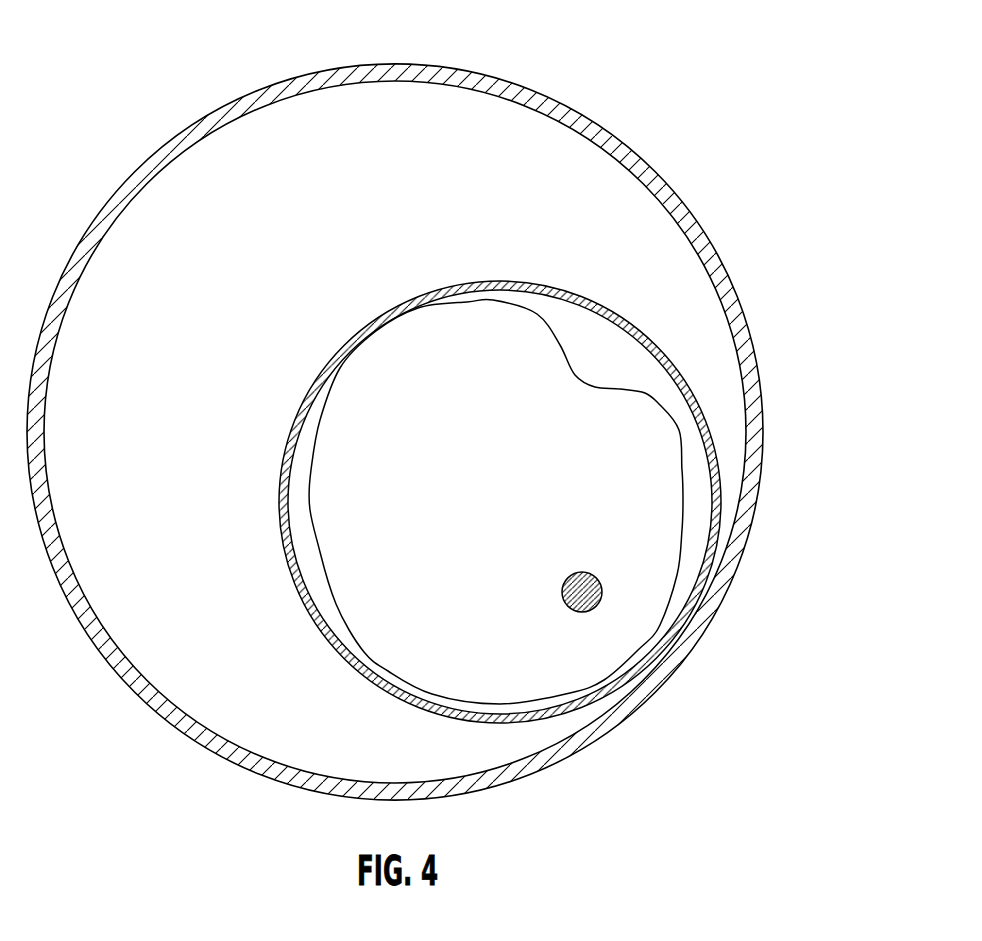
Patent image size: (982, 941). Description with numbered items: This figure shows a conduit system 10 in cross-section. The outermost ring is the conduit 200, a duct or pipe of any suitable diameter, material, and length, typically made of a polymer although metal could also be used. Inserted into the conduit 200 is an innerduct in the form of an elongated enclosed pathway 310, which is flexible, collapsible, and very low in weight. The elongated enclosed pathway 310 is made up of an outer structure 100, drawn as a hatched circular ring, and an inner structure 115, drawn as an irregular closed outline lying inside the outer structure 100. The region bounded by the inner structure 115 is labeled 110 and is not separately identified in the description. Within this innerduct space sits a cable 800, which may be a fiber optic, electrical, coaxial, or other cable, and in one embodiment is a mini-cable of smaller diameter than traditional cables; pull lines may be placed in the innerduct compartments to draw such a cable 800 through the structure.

The conduit system 10 is at (115, 106).
The conduit 200 is at (537, 93).
The outer structure 100 is at (547, 285).
The inner structure 115 is at (678, 545).
The cavity / interior region 110 is at (517, 516).
The cable 800 is at (582, 571).
The elongated enclosed pathway 310 is at (775, 298).